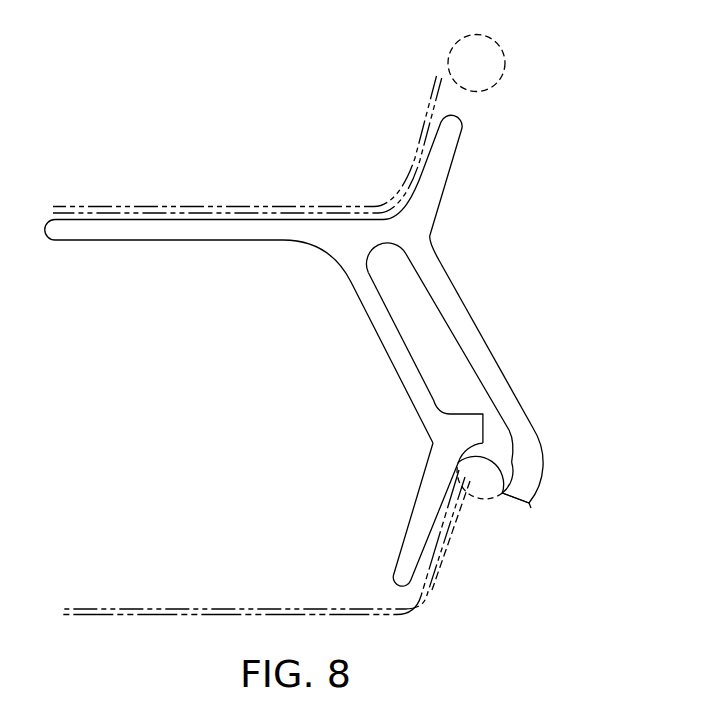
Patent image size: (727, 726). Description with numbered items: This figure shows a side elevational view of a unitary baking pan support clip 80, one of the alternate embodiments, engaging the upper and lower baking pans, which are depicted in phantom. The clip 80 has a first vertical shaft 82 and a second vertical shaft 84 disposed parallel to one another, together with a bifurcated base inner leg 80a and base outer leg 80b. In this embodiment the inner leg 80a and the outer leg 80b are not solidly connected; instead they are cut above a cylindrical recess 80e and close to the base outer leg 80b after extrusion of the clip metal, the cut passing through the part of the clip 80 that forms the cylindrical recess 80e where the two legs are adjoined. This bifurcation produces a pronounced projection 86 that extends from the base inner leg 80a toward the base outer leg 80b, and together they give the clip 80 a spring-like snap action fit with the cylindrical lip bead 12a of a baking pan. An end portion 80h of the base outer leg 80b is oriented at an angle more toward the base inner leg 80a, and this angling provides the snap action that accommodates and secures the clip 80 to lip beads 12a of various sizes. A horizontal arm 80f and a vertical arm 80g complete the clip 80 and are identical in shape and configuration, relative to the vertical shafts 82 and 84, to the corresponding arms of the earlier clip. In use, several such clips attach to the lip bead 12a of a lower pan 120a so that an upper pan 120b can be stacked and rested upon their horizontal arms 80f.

The clip 80 is at (562, 281).
The base inner leg 80a is at (411, 527).
The base outer leg 80b is at (540, 480).
The cylindrical recess 80e is at (492, 443).
The horizontal arm 80f is at (128, 236).
The vertical arm 80g is at (445, 172).
The end portion 80h is at (523, 503).
The first vertical shaft 82 is at (474, 333).
The second vertical shaft 84 is at (378, 330).
The projection 86 is at (466, 420).
The cylindrical lip bead 12a is at (508, 58).
The lower pan 120a is at (233, 607).
The upper pan 120b is at (233, 203).